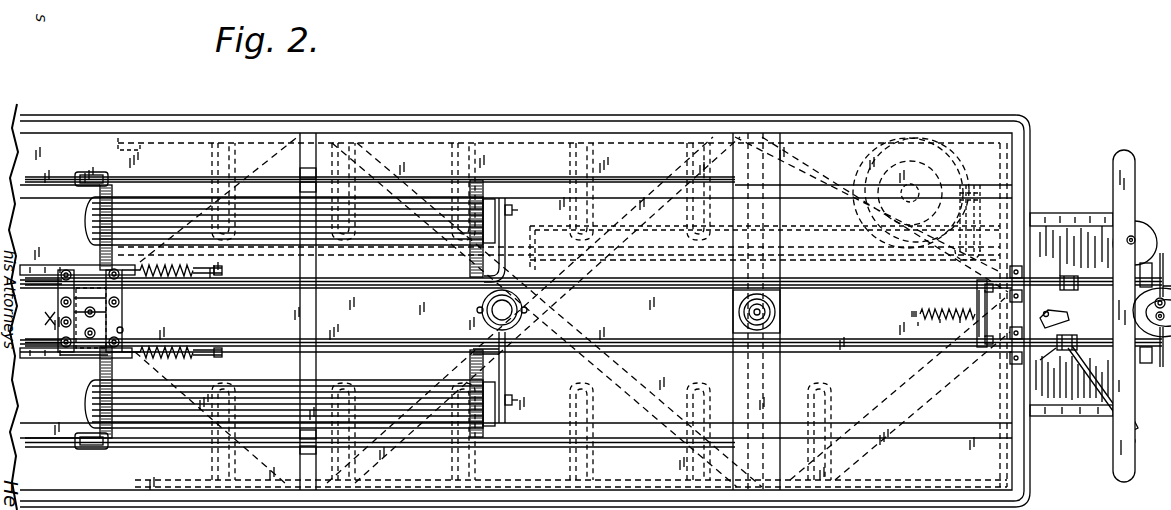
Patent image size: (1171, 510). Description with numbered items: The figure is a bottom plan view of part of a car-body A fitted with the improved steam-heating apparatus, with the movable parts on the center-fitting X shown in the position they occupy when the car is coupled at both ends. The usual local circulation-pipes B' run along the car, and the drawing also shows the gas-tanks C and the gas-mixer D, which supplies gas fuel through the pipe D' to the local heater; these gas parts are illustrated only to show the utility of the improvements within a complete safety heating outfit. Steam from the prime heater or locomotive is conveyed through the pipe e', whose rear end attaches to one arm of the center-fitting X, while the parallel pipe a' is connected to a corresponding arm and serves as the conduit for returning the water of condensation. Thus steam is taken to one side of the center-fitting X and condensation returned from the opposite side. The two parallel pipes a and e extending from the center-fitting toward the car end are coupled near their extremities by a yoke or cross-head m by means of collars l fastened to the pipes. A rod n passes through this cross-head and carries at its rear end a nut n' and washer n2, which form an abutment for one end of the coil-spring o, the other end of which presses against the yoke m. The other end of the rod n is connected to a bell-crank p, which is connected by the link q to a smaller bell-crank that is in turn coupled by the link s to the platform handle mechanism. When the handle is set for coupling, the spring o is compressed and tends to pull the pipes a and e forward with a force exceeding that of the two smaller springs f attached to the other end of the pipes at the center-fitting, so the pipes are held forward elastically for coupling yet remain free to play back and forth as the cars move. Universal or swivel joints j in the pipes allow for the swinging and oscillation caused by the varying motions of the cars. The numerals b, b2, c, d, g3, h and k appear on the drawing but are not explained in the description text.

The car-body A is at (566, 311).
The local circulation-pipes B' is at (564, 311).
The gas-tanks C is at (290, 309).
The gas-mixer D is at (721, 280).
The pipe D' is at (765, 227).
The pipe a is at (598, 237).
The pipe a' is at (77, 282).
The bracket b is at (94, 310).
The bar b2 is at (84, 363).
The pipe c is at (522, 267).
The pipe bend d is at (974, 244).
The pipe e is at (594, 385).
The pipe e' is at (76, 345).
The springs f is at (172, 277).
The pin g3 is at (129, 330).
The bearing h is at (1024, 273).
The universal or swivel joints j is at (1049, 359).
The bearing k is at (1000, 372).
The collars l is at (979, 314).
The yoke or cross-head m is at (979, 313).
The rod n is at (955, 326).
The nut n' is at (937, 307).
The washer n2 is at (919, 330).
The coil-spring o is at (935, 326).
The bell-crank p is at (1054, 319).
The link q is at (1100, 389).
The link s is at (1135, 441).
The center-fitting x is at (45, 321).